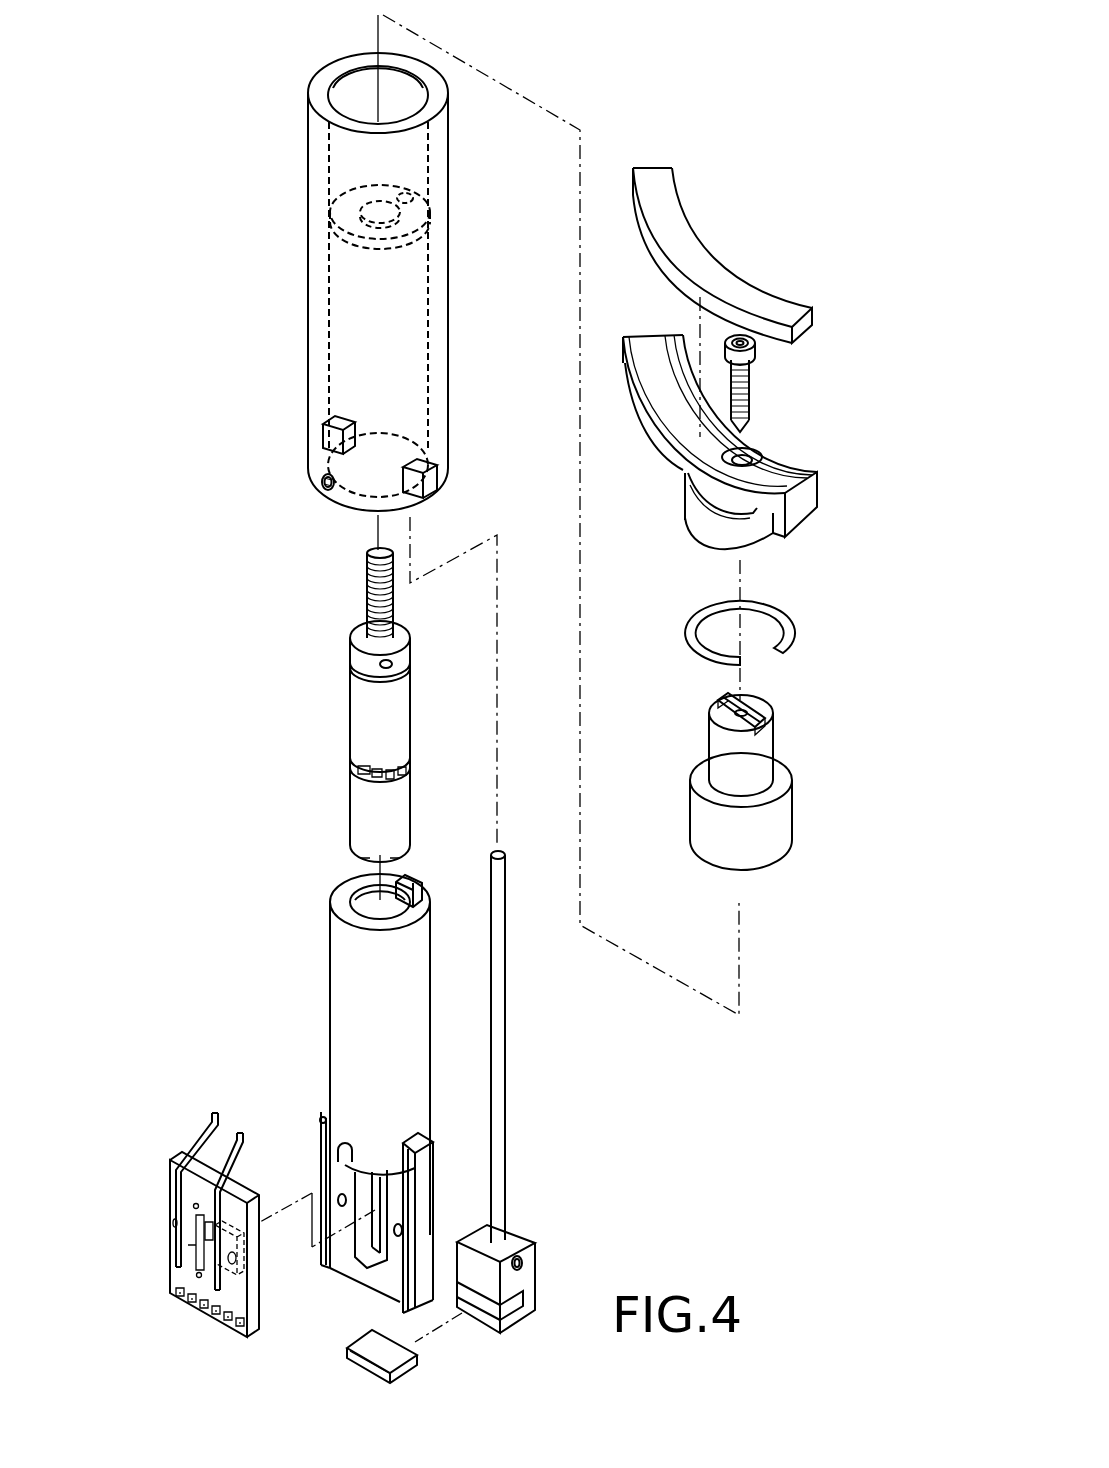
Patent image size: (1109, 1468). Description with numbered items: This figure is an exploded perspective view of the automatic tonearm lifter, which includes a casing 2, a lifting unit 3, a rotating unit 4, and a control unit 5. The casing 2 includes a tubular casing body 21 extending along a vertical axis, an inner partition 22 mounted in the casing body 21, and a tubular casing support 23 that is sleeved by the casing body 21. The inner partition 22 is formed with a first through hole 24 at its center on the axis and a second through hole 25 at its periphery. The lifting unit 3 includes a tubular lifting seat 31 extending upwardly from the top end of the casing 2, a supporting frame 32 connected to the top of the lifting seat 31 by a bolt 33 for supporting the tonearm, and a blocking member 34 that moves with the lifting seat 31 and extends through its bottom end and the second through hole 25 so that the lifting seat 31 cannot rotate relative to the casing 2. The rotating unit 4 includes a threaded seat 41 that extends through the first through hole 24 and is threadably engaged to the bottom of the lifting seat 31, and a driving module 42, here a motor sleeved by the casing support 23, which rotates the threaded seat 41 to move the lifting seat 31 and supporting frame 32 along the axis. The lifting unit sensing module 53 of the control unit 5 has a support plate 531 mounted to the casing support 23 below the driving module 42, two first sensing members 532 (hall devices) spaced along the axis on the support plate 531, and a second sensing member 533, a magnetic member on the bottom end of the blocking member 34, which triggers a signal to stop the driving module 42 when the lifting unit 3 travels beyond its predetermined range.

The casing 2 is at (308, 222).
The tubular casing body 21 is at (440, 238).
The inner partition 22 is at (380, 248).
The tubular casing support 23 is at (358, 973).
The first through hole 24 is at (400, 212).
The second through hole 25 is at (411, 197).
The lifting unit 3 is at (830, 426).
The tubular lifting seat 31 is at (770, 822).
The supporting frame 32 is at (818, 486).
The bolt 33 is at (752, 386).
The rotating unit 4 is at (292, 602).
The threaded seat 41 is at (375, 605).
The driving module 42 is at (352, 684).
The blocking member 34 is at (500, 1097).
The control unit 5 is at (167, 1169).
The lifting unit sensing module 53 is at (199, 1312).
The support plate 531 is at (255, 1323).
The first sensing member 532 is at (246, 1247).
The second sensing member 533 is at (412, 1366).